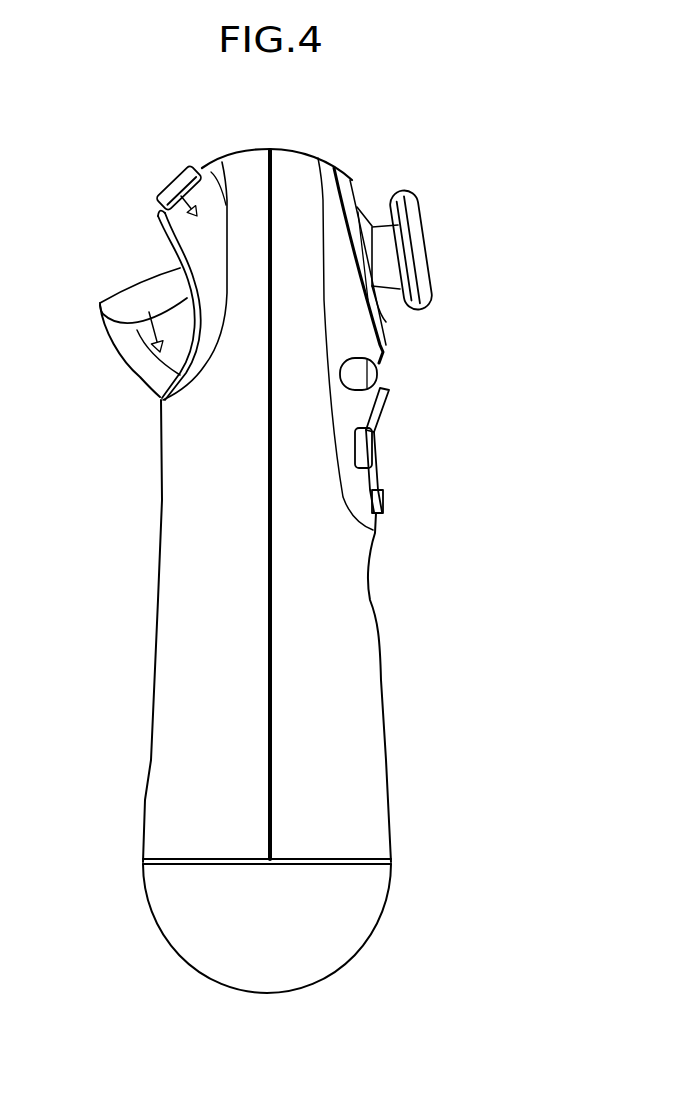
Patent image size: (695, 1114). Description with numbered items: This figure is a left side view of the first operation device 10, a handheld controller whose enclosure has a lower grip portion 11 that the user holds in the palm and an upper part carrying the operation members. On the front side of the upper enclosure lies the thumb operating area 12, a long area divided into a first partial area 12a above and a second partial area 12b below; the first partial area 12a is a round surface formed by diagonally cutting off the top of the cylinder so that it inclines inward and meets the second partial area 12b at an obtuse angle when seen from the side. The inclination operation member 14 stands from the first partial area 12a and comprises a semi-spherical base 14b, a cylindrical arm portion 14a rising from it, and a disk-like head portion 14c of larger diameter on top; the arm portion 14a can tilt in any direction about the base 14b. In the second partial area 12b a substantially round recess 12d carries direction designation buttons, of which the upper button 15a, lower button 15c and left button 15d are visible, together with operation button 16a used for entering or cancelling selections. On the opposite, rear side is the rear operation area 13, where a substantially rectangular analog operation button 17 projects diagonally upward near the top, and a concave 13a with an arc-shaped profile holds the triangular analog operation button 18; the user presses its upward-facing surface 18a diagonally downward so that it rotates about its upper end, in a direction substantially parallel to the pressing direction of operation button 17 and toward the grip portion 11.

The first operation device 10 is at (379, 973).
The grip portion 11 is at (275, 663).
The thumb operating area 12 is at (317, 190).
The first partial area 12a is at (385, 325).
The second partial area 12b is at (385, 447).
The recess 12d is at (385, 423).
The rear operation area 13 is at (223, 203).
The concave 13a is at (157, 238).
The inclination operation member 14 is at (459, 252).
The arm portion 14a is at (390, 248).
The base 14b is at (385, 280).
The head portion 14c is at (414, 201).
The direction designation button 15a is at (388, 408).
The direction designation button 15c is at (382, 487).
The direction designation button 15d is at (370, 458).
The operation button 16a is at (367, 373).
The operation button 17 is at (180, 180).
The operation button 18 is at (107, 352).
The surface 18a is at (145, 295).